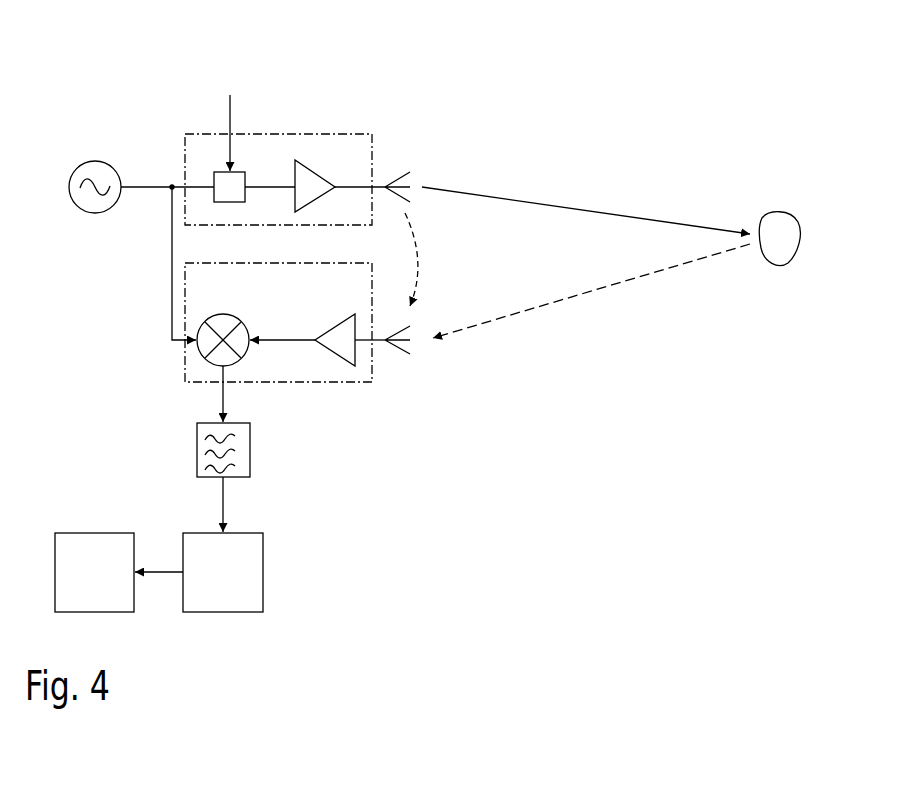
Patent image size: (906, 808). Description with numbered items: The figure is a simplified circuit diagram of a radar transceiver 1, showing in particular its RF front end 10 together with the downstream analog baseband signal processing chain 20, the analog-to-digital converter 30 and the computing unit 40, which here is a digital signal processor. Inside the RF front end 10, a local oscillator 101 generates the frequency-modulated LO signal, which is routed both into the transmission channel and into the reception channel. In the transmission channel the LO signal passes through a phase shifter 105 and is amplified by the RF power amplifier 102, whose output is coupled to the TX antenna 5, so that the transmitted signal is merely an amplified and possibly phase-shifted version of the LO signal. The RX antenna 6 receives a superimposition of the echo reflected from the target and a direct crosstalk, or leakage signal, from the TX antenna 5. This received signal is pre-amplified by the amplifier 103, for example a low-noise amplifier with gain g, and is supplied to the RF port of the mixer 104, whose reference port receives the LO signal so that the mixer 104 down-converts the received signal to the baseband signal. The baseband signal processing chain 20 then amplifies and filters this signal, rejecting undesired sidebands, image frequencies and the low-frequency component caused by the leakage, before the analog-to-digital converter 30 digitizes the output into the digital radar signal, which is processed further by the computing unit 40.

The radar transceiver 1 is at (150, 78).
The RF front end 10 is at (122, 345).
The analog baseband signal processing chain 20 is at (250, 452).
The analog-to-digital converter 30 is at (223, 572).
The computing unit 40 is at (94, 572).
The local oscillator 101 is at (103, 170).
The RF power amplifier 102 is at (319, 172).
The amplifier 103 is at (333, 320).
The mixer 104 is at (232, 314).
The phase shifter 105 is at (264, 164).
The TX antenna 5 is at (392, 172).
The RX antenna 6 is at (399, 357).